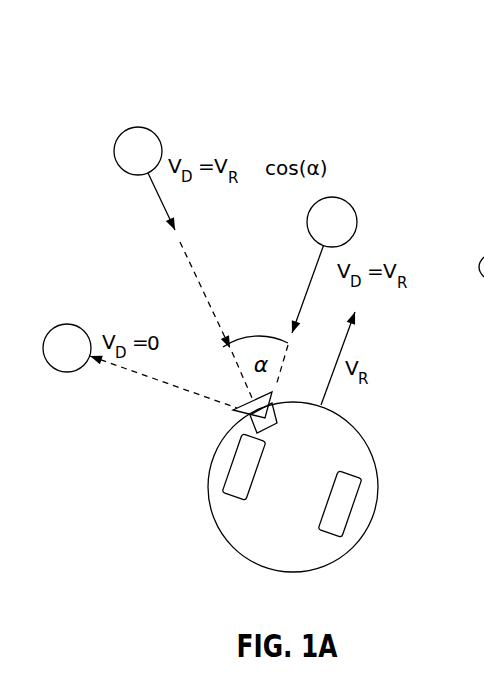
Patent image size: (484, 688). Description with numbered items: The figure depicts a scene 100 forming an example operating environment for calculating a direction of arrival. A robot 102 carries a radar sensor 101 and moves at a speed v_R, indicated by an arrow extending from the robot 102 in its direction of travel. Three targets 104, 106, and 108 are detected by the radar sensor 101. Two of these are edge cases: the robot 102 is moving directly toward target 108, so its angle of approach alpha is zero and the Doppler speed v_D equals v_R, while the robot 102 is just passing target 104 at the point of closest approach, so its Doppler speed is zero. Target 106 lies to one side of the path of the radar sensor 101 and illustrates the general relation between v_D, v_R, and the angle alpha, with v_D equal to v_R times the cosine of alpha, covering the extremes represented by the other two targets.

The scene 100 is at (220, 43).
The radar sensor 101 is at (272, 403).
The robot 102 is at (358, 447).
The target 104 is at (63, 323).
The target 106 is at (138, 127).
The target 108 is at (349, 202).